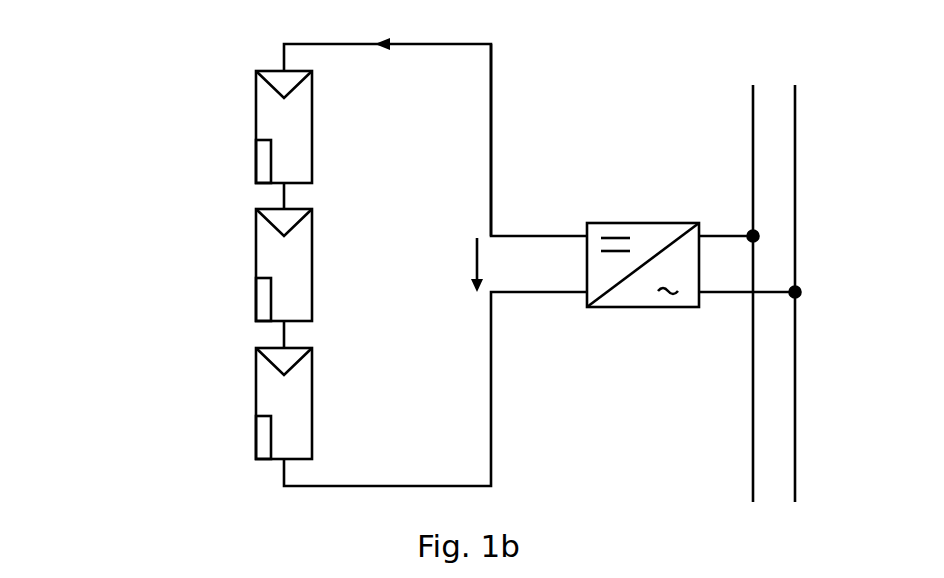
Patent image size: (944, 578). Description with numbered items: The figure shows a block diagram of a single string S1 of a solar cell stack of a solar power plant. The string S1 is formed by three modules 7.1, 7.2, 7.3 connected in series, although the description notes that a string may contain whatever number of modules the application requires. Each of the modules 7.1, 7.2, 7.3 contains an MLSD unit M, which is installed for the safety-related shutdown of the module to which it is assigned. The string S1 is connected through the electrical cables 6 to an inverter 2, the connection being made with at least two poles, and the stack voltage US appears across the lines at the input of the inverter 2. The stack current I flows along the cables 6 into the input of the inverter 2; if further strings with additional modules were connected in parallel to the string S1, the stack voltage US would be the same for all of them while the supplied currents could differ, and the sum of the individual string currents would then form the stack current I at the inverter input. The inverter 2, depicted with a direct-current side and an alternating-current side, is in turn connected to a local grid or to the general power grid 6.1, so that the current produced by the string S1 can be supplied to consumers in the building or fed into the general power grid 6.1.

The string S1 is at (192, 55).
The module 7.1 is at (314, 127).
The module 7.2 is at (314, 265).
The module 7.3 is at (314, 403).
The MLSD unit M is at (262, 172).
The electrical cables 6 is at (491, 71).
The general power grid 6.1 is at (774, 274).
The inverter 2 is at (592, 308).
The stack current I is at (382, 63).
The stack voltage US is at (456, 265).